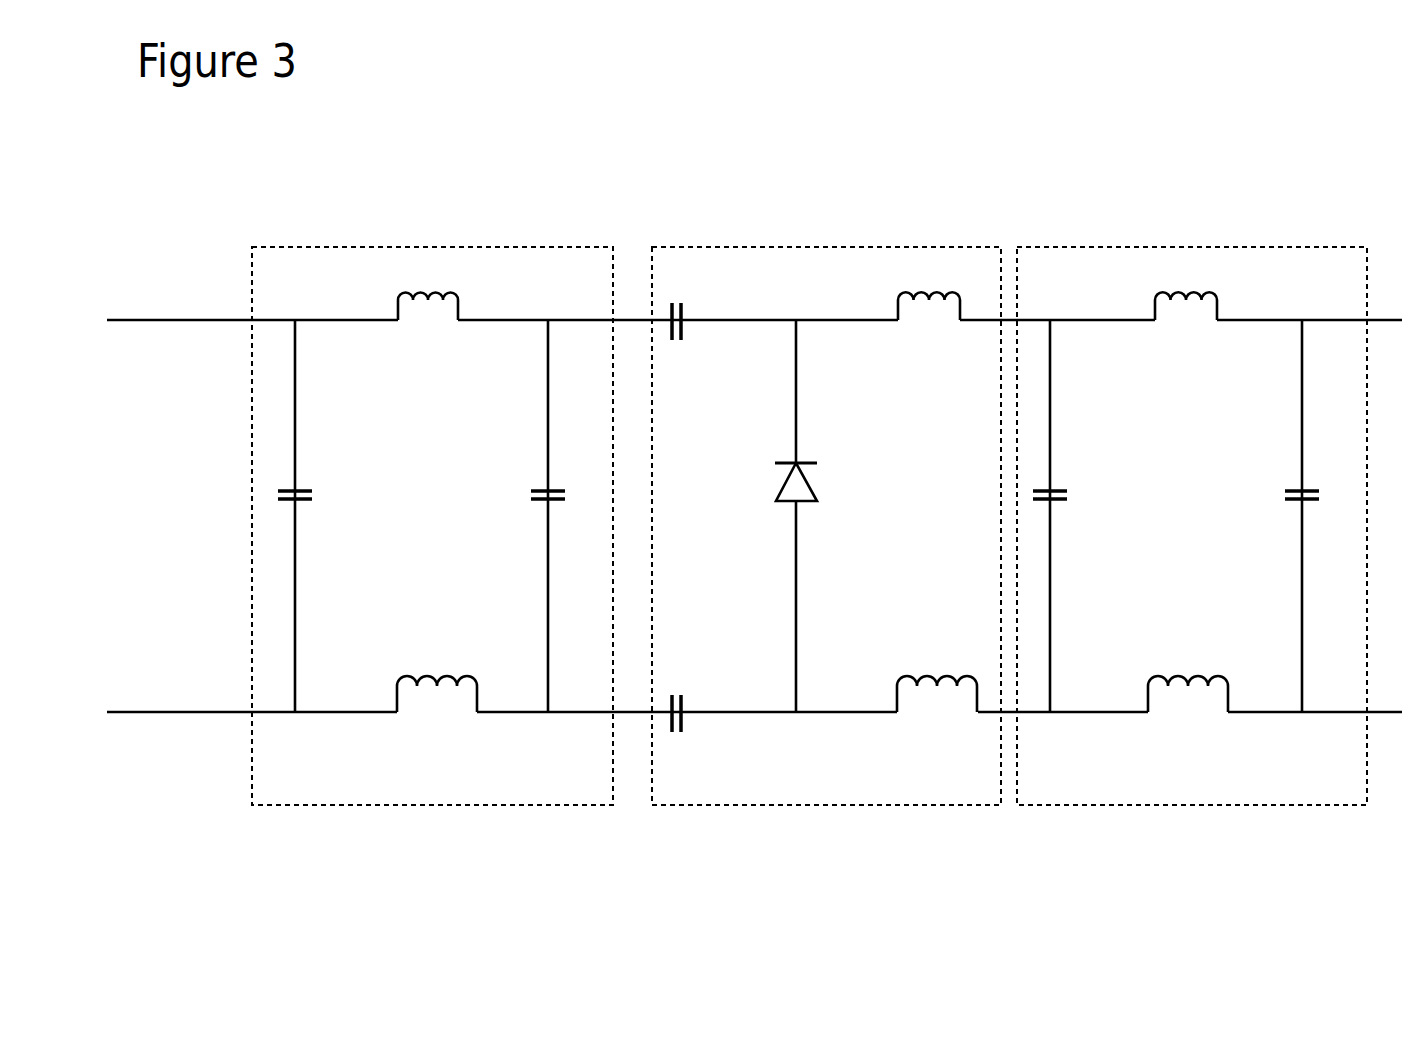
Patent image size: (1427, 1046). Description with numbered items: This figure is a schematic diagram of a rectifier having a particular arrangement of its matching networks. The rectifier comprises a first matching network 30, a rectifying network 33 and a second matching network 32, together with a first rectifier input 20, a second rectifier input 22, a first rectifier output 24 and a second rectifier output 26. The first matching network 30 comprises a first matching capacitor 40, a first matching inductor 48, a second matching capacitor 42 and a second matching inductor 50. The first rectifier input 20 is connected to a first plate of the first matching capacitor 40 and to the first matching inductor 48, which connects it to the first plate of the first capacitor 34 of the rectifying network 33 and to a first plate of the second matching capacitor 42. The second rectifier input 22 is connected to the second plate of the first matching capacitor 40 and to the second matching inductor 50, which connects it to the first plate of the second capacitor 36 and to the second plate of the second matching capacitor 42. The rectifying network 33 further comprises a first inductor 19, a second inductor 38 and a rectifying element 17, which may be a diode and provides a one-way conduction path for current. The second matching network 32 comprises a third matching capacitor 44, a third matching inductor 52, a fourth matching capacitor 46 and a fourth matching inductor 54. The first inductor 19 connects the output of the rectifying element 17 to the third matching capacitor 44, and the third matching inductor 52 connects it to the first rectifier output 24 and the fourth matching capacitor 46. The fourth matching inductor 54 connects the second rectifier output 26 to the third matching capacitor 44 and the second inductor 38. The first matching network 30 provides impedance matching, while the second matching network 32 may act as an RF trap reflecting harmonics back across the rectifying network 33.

The rectifying element 17 is at (812, 490).
The first inductor 19 is at (898, 298).
The first rectifier input 20 is at (172, 320).
The second rectifier input 22 is at (172, 712).
The first rectifier output 24 is at (1390, 320).
The second rectifier output 26 is at (1390, 712).
The first matching network 30 is at (452, 567).
The second matching network 32 is at (1192, 567).
The rectifying network 33 is at (834, 567).
The first capacitor 34 is at (683, 310).
The second capacitor 36 is at (683, 700).
The second inductor 38 is at (897, 680).
The first matching capacitor 40 is at (305, 491).
The second matching capacitor 42 is at (538, 491).
The third matching capacitor 44 is at (1058, 491).
The fourth matching capacitor 46 is at (1294, 491).
The first matching inductor 48 is at (398, 298).
The second matching inductor 50 is at (397, 680).
The third matching inductor 52 is at (1155, 298).
The fourth matching inductor 54 is at (1178, 676).